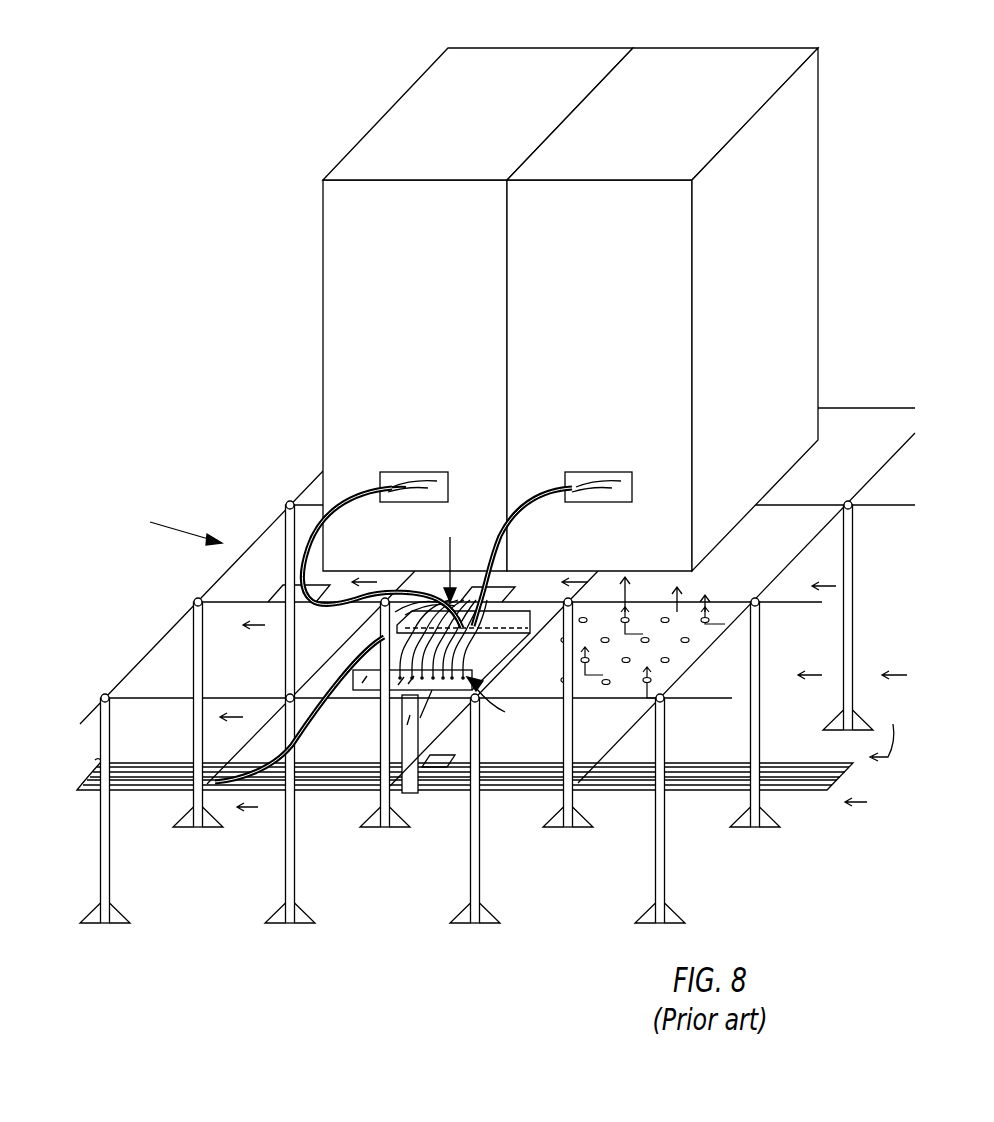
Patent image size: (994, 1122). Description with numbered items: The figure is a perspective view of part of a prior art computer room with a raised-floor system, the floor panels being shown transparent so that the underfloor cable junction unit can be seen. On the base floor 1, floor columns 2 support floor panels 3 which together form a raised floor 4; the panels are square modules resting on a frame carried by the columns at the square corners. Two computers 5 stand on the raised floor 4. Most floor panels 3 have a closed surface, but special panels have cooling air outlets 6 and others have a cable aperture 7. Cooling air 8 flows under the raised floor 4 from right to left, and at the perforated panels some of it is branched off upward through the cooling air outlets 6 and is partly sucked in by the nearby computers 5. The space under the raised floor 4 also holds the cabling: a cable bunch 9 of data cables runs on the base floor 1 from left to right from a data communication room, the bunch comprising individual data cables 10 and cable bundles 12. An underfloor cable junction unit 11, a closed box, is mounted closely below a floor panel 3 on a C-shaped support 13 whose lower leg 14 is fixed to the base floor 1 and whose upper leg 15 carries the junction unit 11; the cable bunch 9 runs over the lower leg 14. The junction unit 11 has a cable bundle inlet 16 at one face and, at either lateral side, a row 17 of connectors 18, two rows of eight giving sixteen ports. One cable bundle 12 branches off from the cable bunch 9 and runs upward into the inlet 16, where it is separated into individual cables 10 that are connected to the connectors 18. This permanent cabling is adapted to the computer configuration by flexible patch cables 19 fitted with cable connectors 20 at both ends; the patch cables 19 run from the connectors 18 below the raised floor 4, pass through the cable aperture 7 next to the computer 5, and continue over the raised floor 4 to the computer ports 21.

The base floor 1 is at (180, 894).
The floor column 2 is at (193, 743).
The floor panel 3 is at (240, 589).
The raised floor 4 is at (175, 524).
The computer 5 is at (406, 329).
The cooling air outlet 6 is at (677, 652).
The cable aperture 7 is at (513, 590).
The cooling air 8 is at (886, 731).
The cable bunch 9 is at (594, 791).
The data cable 10 is at (503, 645).
The underfloor cable junction unit 11 is at (450, 557).
The cable bundle 12 is at (335, 676).
The support 13 is at (409, 793).
The lower leg 14 is at (446, 754).
The upper leg 15 is at (396, 692).
The cable bundle inlet 16 is at (398, 608).
The row of connectors 17 is at (499, 698).
The connector 18 is at (425, 605).
The patch cable 19 is at (314, 560).
The cable connector 20 is at (385, 690).
The computer port 21 is at (405, 486).